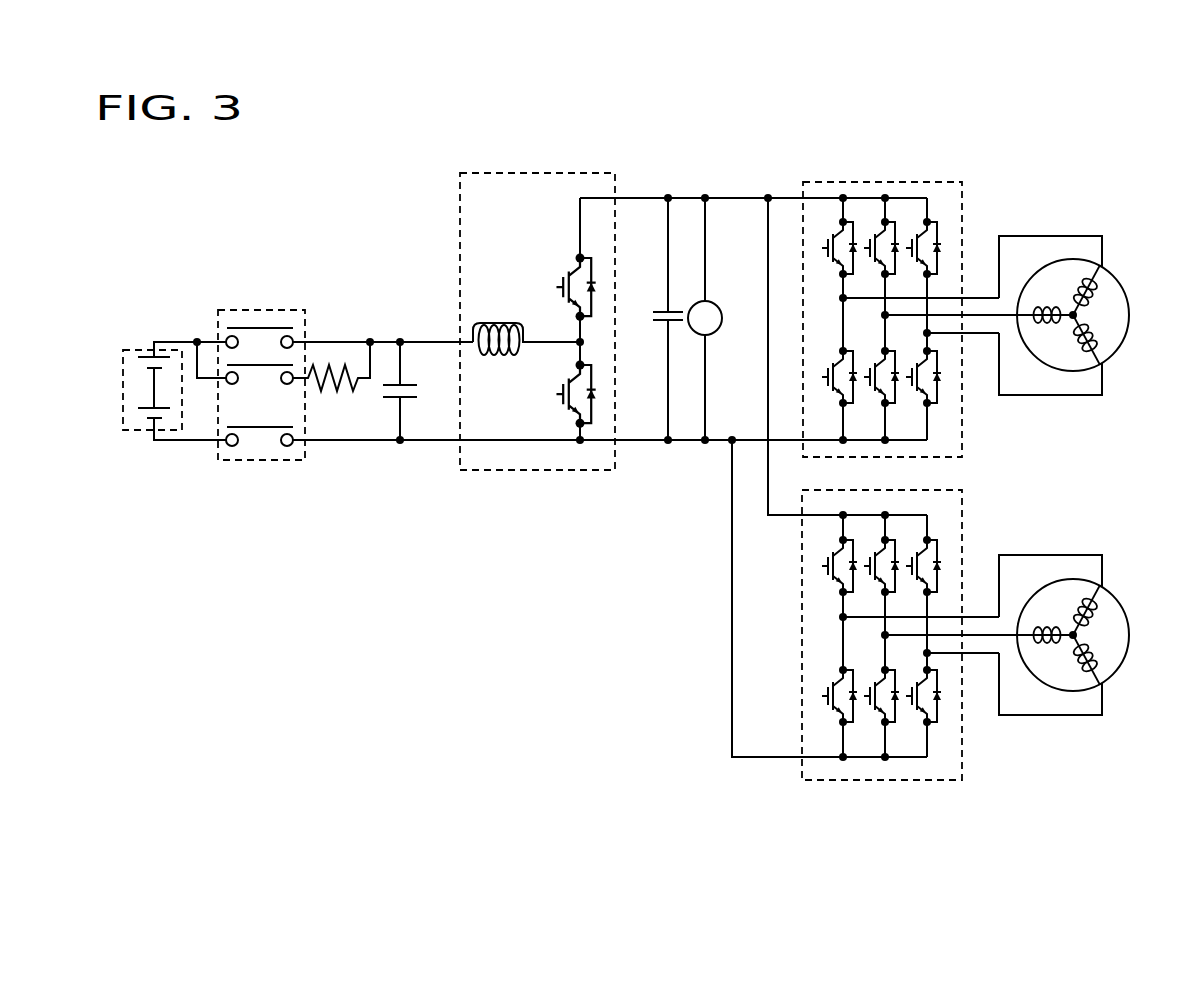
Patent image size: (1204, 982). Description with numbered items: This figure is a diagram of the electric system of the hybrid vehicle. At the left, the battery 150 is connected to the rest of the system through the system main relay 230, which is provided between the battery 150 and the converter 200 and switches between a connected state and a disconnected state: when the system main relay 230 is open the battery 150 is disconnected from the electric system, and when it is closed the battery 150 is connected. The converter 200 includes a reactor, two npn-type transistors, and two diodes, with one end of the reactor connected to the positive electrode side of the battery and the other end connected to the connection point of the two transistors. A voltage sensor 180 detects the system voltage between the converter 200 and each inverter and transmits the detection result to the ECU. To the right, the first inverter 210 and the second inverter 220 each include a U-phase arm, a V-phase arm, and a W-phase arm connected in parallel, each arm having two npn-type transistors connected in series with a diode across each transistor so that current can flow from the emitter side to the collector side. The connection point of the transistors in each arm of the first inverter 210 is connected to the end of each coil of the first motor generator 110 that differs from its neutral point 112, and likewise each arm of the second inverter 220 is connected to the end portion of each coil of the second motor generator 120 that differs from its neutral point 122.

The first motor generator 110 is at (1093, 292).
The neutral point 112 is at (1072, 313).
The second motor generator 120 is at (1093, 612).
The neutral point 122 is at (1072, 633).
The battery 150 is at (138, 350).
The voltage sensor 180 is at (720, 329).
The converter 200 is at (597, 170).
The first inverter 210 is at (962, 408).
The second inverter 220 is at (962, 727).
The system main relay 230 is at (257, 310).